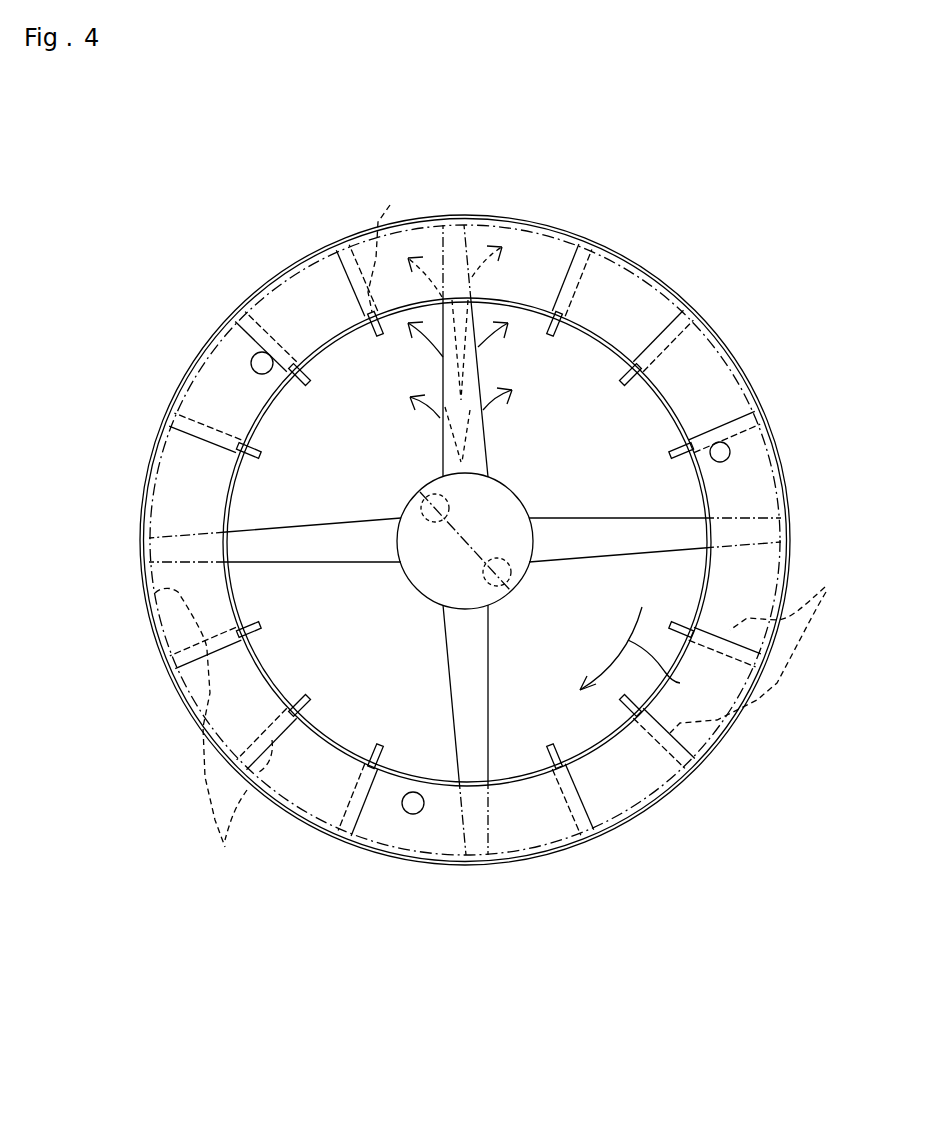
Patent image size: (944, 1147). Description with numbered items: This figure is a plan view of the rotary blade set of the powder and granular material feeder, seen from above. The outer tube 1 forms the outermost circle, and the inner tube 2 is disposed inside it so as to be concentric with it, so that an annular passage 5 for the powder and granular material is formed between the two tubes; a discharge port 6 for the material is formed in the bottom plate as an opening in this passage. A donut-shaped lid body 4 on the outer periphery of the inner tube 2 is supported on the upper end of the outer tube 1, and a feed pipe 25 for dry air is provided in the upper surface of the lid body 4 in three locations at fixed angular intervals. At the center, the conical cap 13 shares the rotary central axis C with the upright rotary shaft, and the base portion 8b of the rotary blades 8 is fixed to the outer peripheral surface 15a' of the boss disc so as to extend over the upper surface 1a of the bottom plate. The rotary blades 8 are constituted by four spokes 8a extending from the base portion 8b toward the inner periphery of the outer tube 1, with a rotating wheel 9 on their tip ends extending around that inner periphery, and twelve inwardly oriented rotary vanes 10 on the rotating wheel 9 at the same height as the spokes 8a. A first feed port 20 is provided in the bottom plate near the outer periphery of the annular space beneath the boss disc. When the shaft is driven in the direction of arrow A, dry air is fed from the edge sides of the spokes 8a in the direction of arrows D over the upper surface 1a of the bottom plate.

The outer tube 1 is at (678, 289).
The upper surface of the bottom plate 1a is at (348, 703).
The inner tube 2 is at (667, 423).
The donut-shaped lid body 4 is at (703, 378).
The annular passage 5 is at (548, 261).
The discharge port 6 is at (150, 600).
The rotary blades 8 is at (440, 383).
The spokes 8a is at (303, 555).
The base portion 8b is at (395, 541).
The rotating wheel 9 is at (630, 803).
The inwardly oriented rotary vanes 10 is at (507, 532).
The conical cap 13 is at (378, 567).
The outer peripheral surface of the boss disc 15a' is at (417, 620).
The first feed port 20 is at (434, 523).
The feed pipe 25 is at (253, 372).
The arrow A is at (645, 656).
The rotary central axis C is at (464, 548).
The arrows D is at (461, 355).